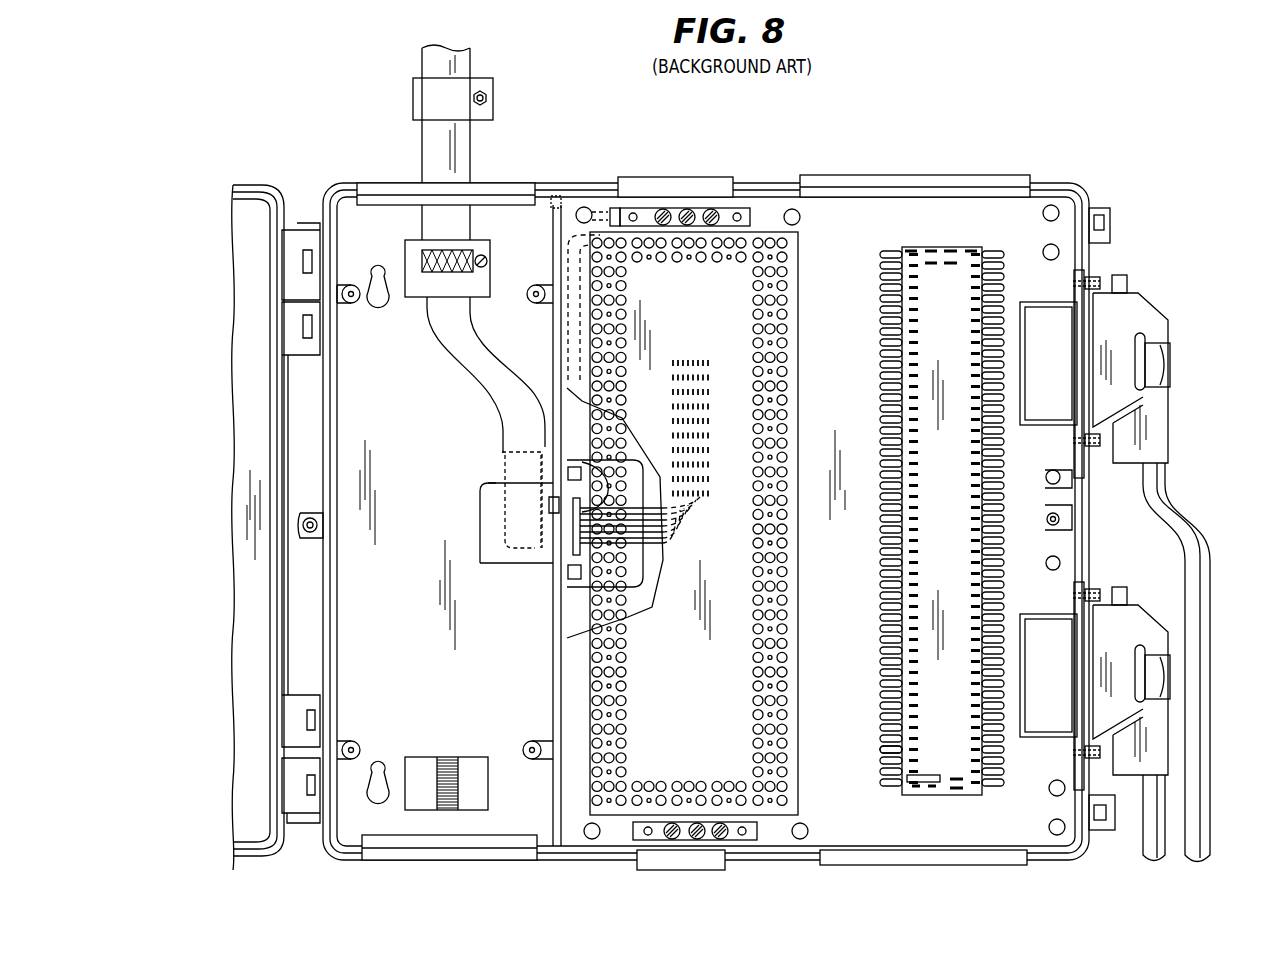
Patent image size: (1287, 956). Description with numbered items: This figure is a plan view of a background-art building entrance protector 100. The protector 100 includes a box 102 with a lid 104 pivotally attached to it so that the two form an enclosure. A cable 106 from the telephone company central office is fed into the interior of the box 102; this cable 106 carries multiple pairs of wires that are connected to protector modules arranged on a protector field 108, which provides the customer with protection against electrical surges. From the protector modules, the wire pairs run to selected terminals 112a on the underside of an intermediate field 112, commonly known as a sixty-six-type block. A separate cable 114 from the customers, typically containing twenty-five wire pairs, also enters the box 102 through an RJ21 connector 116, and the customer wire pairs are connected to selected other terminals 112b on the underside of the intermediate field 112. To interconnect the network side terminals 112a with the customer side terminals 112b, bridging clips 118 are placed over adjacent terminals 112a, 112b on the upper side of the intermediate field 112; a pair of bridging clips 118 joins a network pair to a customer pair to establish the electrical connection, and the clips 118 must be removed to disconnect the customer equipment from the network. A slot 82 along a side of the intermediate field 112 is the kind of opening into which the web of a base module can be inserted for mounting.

The building entrance protector 100 is at (666, 150).
The box 102 is at (573, 183).
The lid 104 is at (240, 186).
The cable 106 is at (493, 382).
The protector field 108 is at (713, 702).
The intermediate field 112 is at (961, 524).
The terminals 112a is at (914, 795).
The other terminals 112b is at (935, 795).
The cable 114 is at (1152, 838).
The RJ21 connector 116 is at (1110, 320).
The bridging clips 118 is at (925, 775).
The slot 82 is at (882, 750).